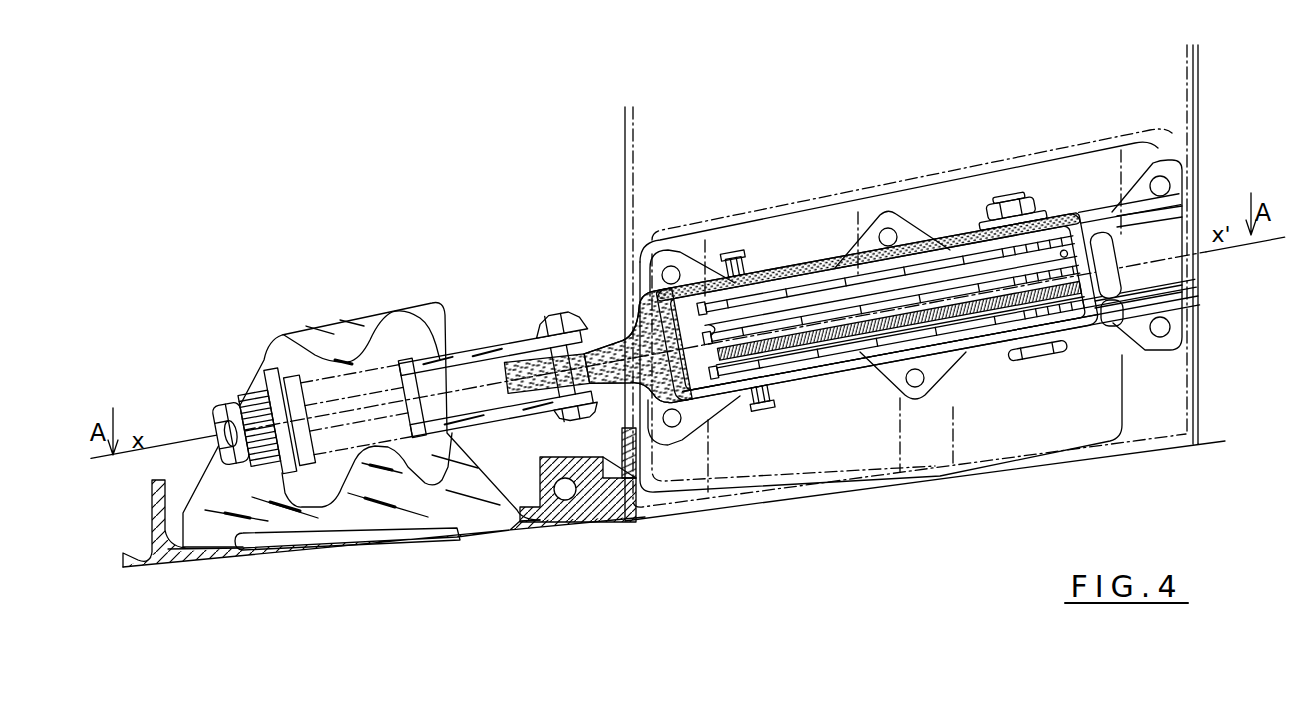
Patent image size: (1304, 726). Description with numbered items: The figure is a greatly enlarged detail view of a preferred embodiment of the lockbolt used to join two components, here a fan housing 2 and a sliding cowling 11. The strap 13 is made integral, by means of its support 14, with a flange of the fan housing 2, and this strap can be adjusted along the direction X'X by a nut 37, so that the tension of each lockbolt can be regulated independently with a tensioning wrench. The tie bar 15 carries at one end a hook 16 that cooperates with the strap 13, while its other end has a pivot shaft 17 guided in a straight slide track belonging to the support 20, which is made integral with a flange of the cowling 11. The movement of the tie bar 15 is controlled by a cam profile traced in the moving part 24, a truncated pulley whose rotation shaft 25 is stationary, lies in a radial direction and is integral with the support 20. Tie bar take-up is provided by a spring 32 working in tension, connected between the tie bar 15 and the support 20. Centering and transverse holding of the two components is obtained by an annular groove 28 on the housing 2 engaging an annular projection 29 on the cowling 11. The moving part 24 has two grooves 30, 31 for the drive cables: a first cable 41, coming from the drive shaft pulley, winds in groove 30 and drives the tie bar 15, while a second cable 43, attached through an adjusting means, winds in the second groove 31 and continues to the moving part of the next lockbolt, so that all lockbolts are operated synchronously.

The fan housing 2 is at (405, 545).
The sliding cowling 11 is at (1035, 430).
The strap 13 is at (560, 326).
The support 14 is at (213, 494).
The tie bar 15 is at (845, 372).
The hook 16 is at (515, 370).
The pivot shaft 17 is at (980, 228).
The support 20 is at (1137, 333).
The moving part 24 is at (905, 383).
The rotation shaft 25 is at (897, 337).
The annular groove 28 is at (567, 518).
The annular projection 29 is at (625, 518).
The groove 30 is at (1090, 252).
The groove 31 is at (1072, 323).
The spring 32 is at (748, 258).
The nut 37 is at (230, 408).
The first cable 41 is at (1066, 258).
The second cable 43 is at (740, 348).